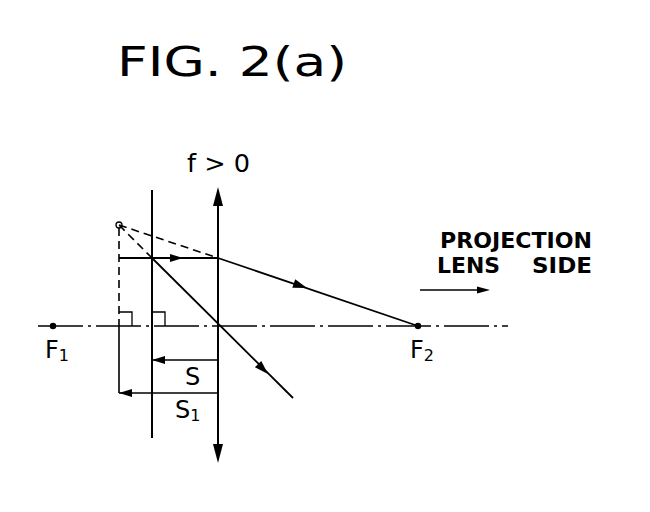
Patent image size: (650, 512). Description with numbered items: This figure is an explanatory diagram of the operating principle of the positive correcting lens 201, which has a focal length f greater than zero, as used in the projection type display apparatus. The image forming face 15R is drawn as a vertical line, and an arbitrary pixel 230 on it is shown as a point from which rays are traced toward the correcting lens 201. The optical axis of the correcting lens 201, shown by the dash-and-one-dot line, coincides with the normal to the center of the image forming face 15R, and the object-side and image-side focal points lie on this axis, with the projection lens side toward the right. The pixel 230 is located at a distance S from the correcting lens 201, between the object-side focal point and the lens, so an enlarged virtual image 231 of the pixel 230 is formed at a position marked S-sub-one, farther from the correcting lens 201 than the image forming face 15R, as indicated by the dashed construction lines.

The image forming face 15R is at (152, 203).
The enlarged virtual image 231 is at (118, 222).
The pixel 230 is at (120, 258).
The positive correcting lens 201 is at (222, 422).